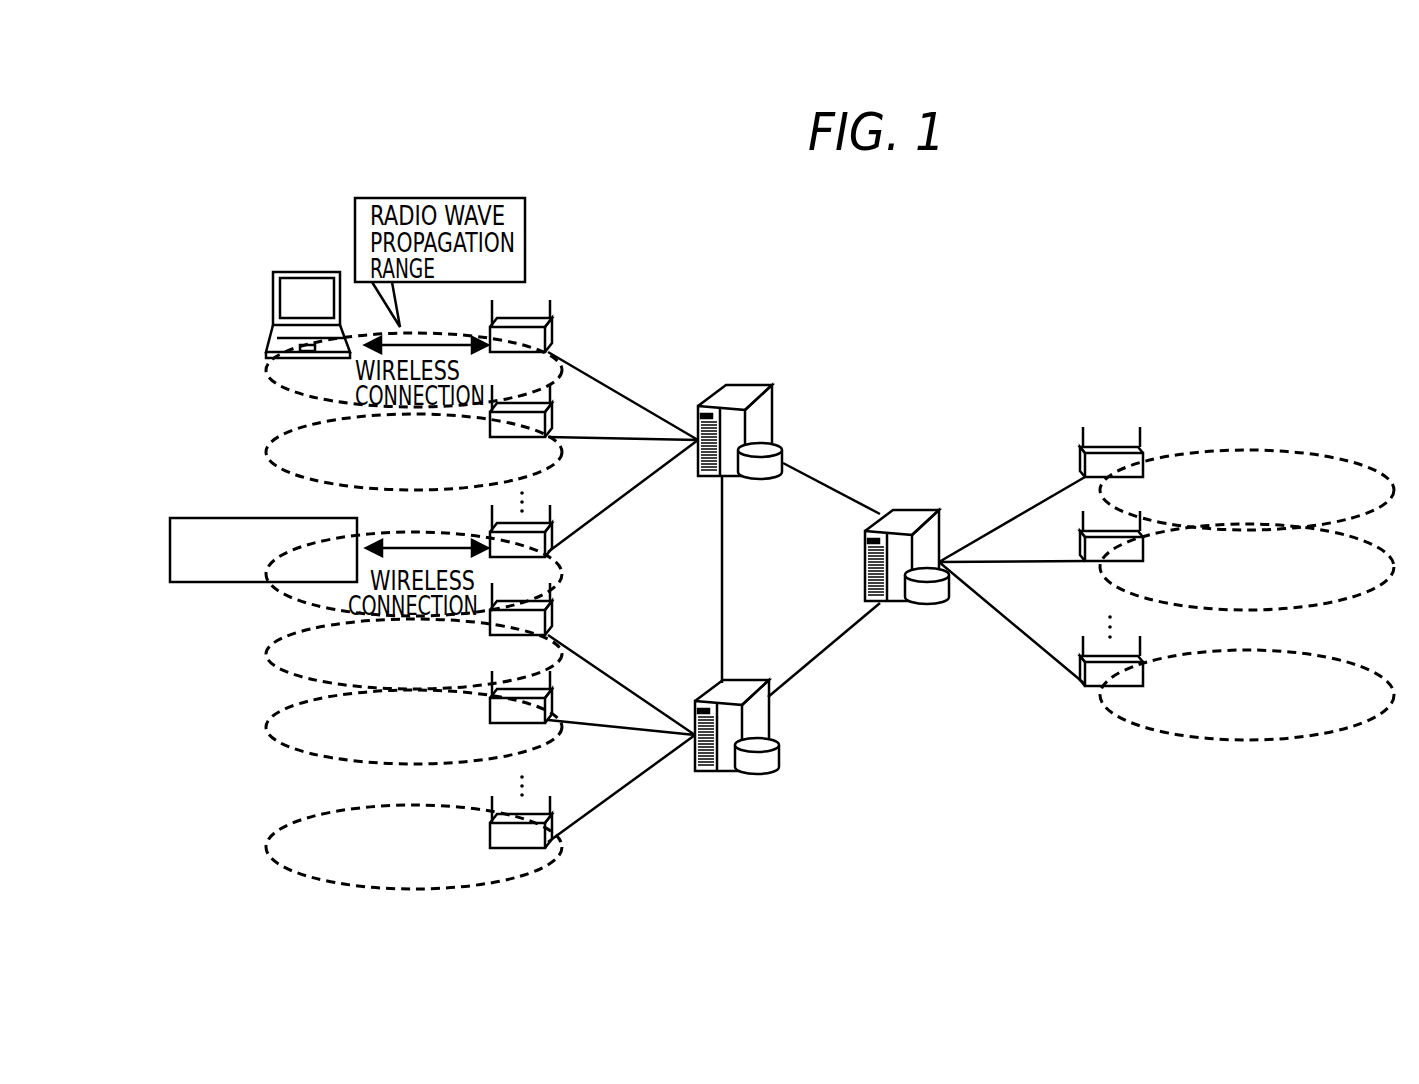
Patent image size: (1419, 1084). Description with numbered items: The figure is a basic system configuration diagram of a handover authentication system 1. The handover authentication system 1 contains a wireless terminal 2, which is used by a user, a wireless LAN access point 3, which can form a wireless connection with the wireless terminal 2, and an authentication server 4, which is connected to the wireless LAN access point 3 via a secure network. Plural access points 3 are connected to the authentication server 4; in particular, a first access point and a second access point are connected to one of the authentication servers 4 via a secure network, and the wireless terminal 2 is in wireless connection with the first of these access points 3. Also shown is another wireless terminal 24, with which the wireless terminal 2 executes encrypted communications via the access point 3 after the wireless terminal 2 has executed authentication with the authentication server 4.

The handover authentication system 1 is at (943, 374).
The wireless terminal 2 is at (309, 272).
The wireless LAN access point 3 is at (823, 572).
The authentication server 4 is at (822, 584).
The another wireless terminal 24 is at (170, 548).